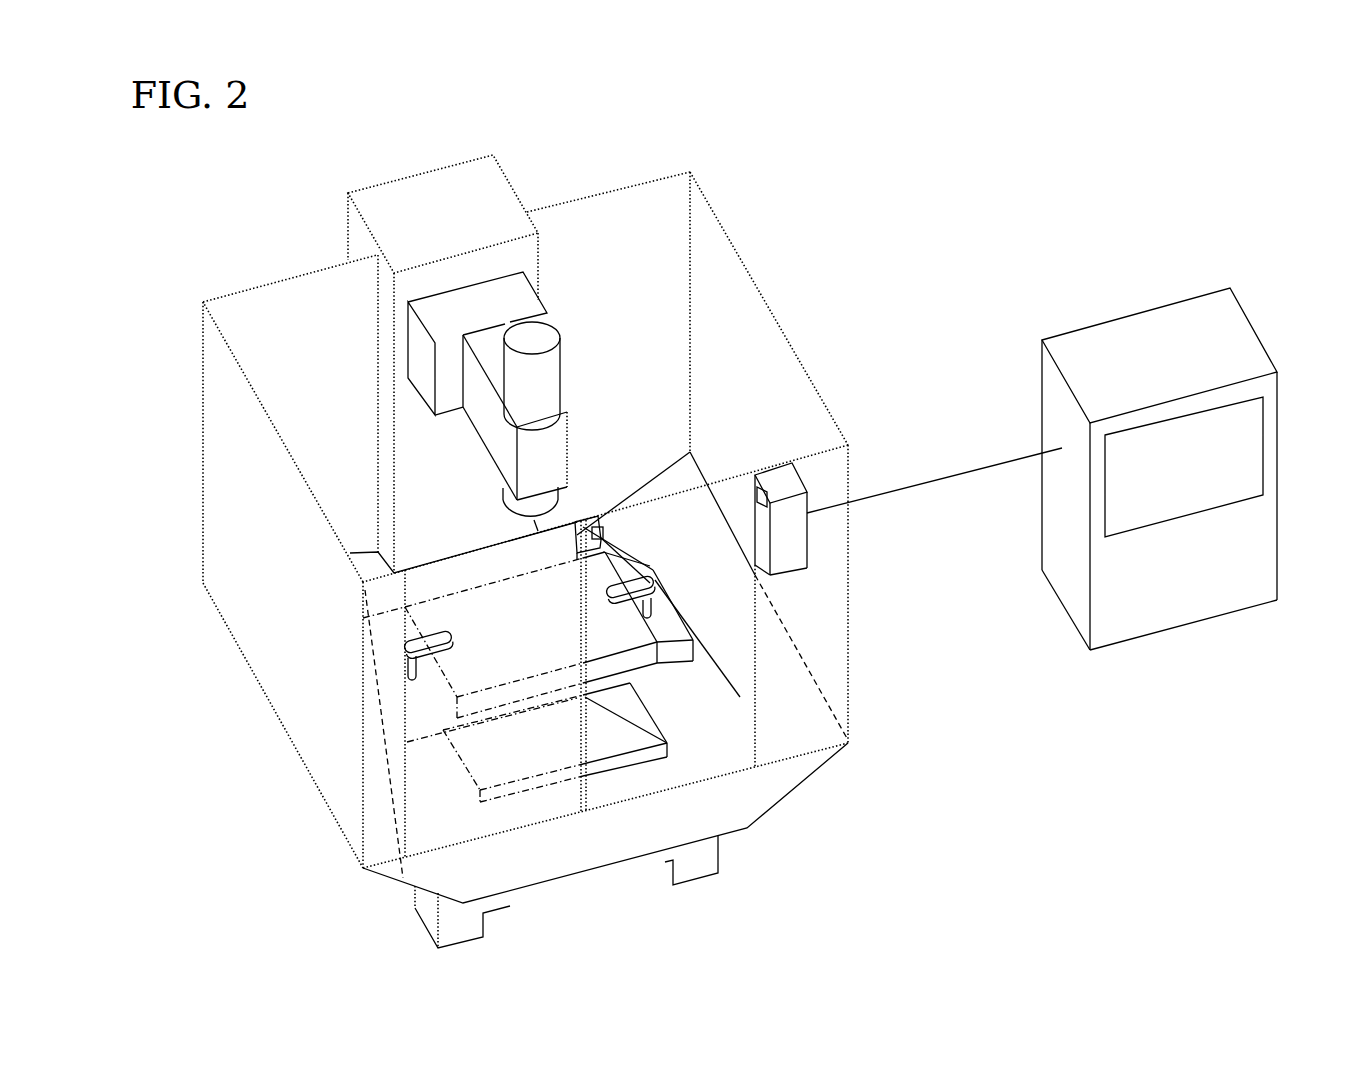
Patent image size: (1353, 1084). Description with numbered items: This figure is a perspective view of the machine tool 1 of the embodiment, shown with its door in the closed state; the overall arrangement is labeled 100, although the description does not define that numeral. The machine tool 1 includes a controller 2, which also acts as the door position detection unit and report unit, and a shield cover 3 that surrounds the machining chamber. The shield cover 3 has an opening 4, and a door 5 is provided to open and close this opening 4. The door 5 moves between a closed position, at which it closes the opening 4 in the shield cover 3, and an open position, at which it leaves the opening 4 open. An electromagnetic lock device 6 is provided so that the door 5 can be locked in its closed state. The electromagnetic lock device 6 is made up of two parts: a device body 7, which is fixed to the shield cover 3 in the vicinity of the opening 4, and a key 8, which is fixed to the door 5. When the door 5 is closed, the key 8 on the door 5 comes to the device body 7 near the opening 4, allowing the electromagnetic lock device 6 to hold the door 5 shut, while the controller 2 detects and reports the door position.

The machine tool system 100 is at (968, 142).
The machine tool 1 is at (752, 194).
The controller 2 is at (1144, 324).
The shield cover 3 is at (216, 418).
The opening 4 is at (753, 628).
The door 5 is at (478, 818).
The electromagnetic lock device 6 is at (678, 335).
The device body 7 is at (780, 483).
The key 8 is at (577, 512).